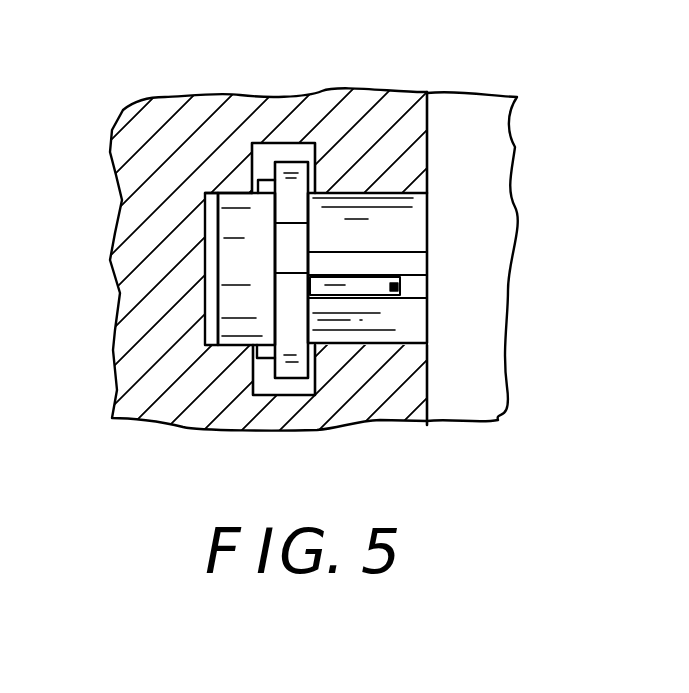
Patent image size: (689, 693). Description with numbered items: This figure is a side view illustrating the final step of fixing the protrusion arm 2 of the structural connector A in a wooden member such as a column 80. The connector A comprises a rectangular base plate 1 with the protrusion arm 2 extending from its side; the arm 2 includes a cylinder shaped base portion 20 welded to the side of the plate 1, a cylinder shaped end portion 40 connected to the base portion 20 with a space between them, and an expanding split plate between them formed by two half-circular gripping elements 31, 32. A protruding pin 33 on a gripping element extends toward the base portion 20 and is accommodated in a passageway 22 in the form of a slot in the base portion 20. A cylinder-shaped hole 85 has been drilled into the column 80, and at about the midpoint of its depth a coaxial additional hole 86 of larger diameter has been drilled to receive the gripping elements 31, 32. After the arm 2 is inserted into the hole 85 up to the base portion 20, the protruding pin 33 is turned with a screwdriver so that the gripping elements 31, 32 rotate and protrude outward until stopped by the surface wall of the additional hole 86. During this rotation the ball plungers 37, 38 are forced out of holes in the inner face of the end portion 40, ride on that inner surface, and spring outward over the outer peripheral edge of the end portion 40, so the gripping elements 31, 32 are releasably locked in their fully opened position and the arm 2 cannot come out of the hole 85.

The base plate 1 is at (482, 182).
The protrusion arm 2 is at (227, 192).
The base portion 20 is at (386, 221).
The passageway 22 is at (410, 268).
The gripping element 31 is at (297, 358).
The gripping element 32 is at (293, 170).
The protruding pin 33 is at (377, 287).
The ball plunger 37 is at (255, 352).
The ball plunger 38 is at (266, 183).
The end portion 40 is at (232, 265).
The column 80 is at (132, 293).
The hole 85 is at (215, 215).
The additional hole 86 is at (318, 152).
The structural connector A is at (507, 368).